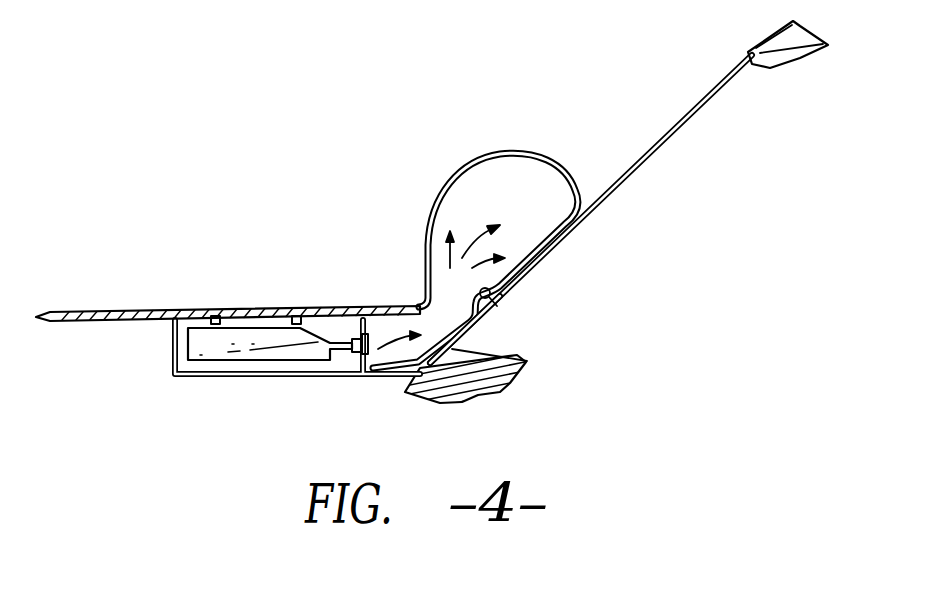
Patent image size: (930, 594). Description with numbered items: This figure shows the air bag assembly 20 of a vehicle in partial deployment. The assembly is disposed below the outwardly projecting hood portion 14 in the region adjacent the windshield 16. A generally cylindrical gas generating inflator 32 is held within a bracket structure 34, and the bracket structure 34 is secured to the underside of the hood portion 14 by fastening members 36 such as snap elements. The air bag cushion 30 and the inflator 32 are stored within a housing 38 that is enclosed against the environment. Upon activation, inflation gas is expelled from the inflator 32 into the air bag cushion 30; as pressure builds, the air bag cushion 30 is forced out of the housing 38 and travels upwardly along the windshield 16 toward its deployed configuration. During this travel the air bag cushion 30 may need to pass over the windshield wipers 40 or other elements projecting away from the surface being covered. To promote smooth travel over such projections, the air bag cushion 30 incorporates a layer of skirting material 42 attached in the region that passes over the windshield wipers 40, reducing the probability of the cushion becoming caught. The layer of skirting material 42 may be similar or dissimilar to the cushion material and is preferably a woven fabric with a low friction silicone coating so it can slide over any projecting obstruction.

The hood portion 14 is at (142, 312).
The windshield 16 is at (675, 120).
The air bag assembly 20 is at (172, 406).
The air bag cushion 30 is at (470, 170).
The gas generating inflator 32 is at (277, 360).
The bracket structure 34 is at (352, 352).
The fastening members 36 is at (215, 315).
The housing 38 is at (175, 350).
The windshield wipers 40 is at (493, 300).
The layer of skirting material 42 is at (477, 322).